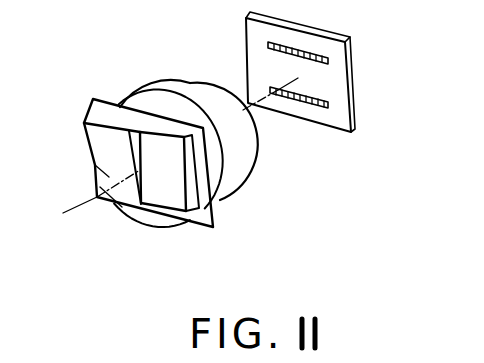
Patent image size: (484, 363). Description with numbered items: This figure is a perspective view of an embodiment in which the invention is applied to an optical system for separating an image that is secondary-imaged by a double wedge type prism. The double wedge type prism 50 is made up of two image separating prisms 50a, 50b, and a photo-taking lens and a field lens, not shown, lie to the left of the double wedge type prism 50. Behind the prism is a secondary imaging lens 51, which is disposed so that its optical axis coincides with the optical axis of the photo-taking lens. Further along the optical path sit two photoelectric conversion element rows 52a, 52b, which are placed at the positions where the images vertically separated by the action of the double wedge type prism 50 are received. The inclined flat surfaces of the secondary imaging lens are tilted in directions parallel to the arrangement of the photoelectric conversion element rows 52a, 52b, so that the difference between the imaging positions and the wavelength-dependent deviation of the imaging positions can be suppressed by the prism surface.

The double wedge type prism 50 is at (183, 203).
The image separating prism 50a is at (97, 197).
The image separating prism 50b is at (165, 203).
The secondary imaging lens 51 is at (163, 87).
The photoelectric conversion element row 52a is at (328, 62).
The photoelectric conversion element row 52b is at (328, 106).